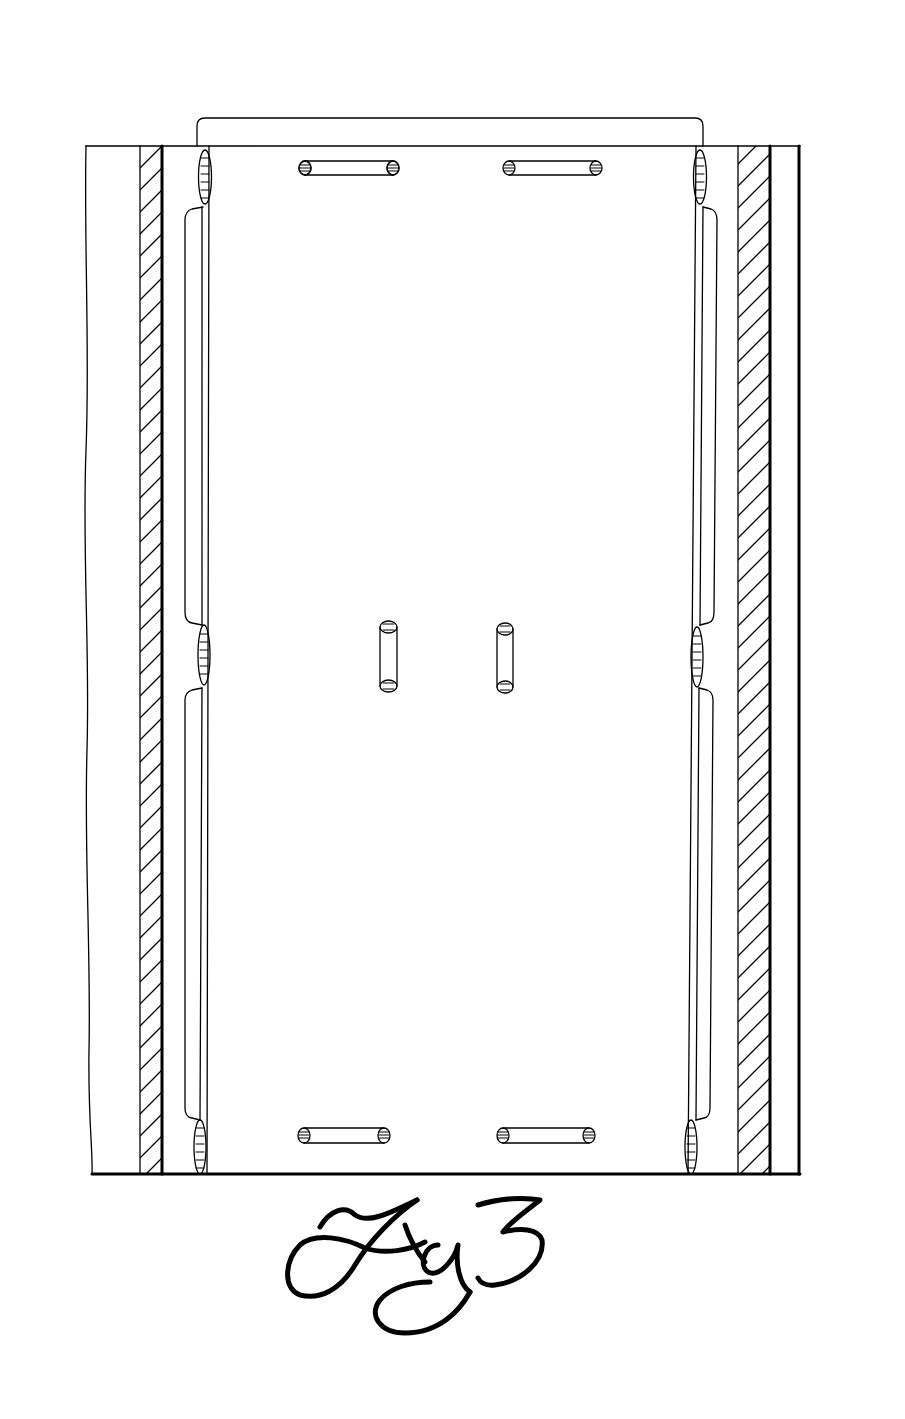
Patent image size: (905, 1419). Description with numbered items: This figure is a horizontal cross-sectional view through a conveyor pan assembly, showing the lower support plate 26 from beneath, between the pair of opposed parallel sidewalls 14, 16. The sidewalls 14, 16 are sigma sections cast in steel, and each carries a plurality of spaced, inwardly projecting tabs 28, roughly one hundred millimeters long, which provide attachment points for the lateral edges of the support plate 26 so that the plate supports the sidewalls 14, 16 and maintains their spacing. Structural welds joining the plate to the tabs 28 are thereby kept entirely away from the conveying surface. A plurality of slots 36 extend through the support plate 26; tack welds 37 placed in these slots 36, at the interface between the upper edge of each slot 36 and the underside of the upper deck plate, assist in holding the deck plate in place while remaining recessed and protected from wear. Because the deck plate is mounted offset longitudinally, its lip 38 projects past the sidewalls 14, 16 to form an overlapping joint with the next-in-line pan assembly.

The sidewall 14 is at (92, 1173).
The sidewall 16 is at (783, 1177).
The lower support plate 26 is at (418, 864).
The inwardly projecting tabs 28 is at (192, 182).
The slots 36 is at (545, 172).
The tack welds 37 is at (307, 162).
The lip 38 is at (557, 125).